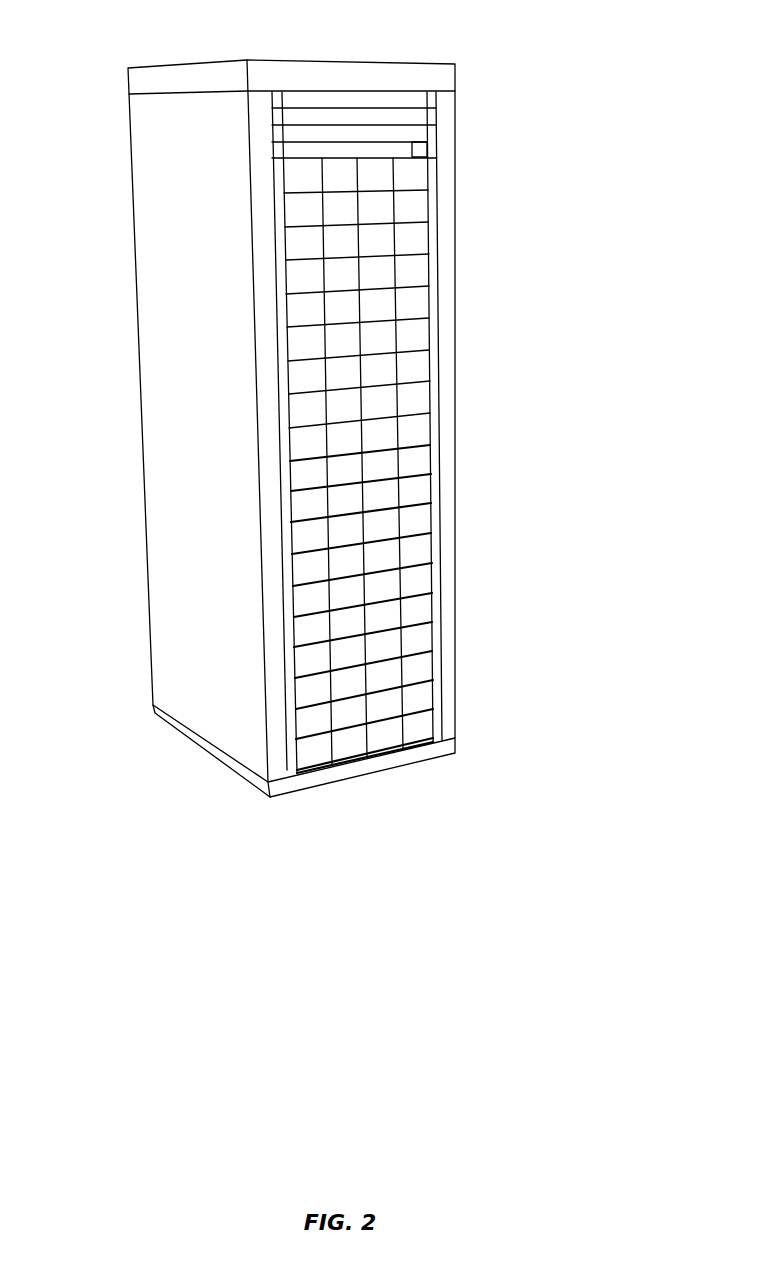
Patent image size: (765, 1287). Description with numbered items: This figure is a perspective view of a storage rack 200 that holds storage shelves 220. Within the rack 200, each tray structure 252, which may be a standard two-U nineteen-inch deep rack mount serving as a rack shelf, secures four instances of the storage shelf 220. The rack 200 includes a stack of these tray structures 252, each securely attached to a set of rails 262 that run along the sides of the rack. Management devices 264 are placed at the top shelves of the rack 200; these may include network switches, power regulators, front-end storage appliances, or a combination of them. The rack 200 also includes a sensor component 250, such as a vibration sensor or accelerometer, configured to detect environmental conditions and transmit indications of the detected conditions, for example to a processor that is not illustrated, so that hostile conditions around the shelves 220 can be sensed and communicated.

The storage rack 200 is at (372, 56).
The storage shelf 220 is at (433, 183).
The sensor component 250 is at (427, 152).
The tray structure 252 is at (276, 245).
The rails 262 is at (283, 370).
The management devices 264 is at (288, 151).